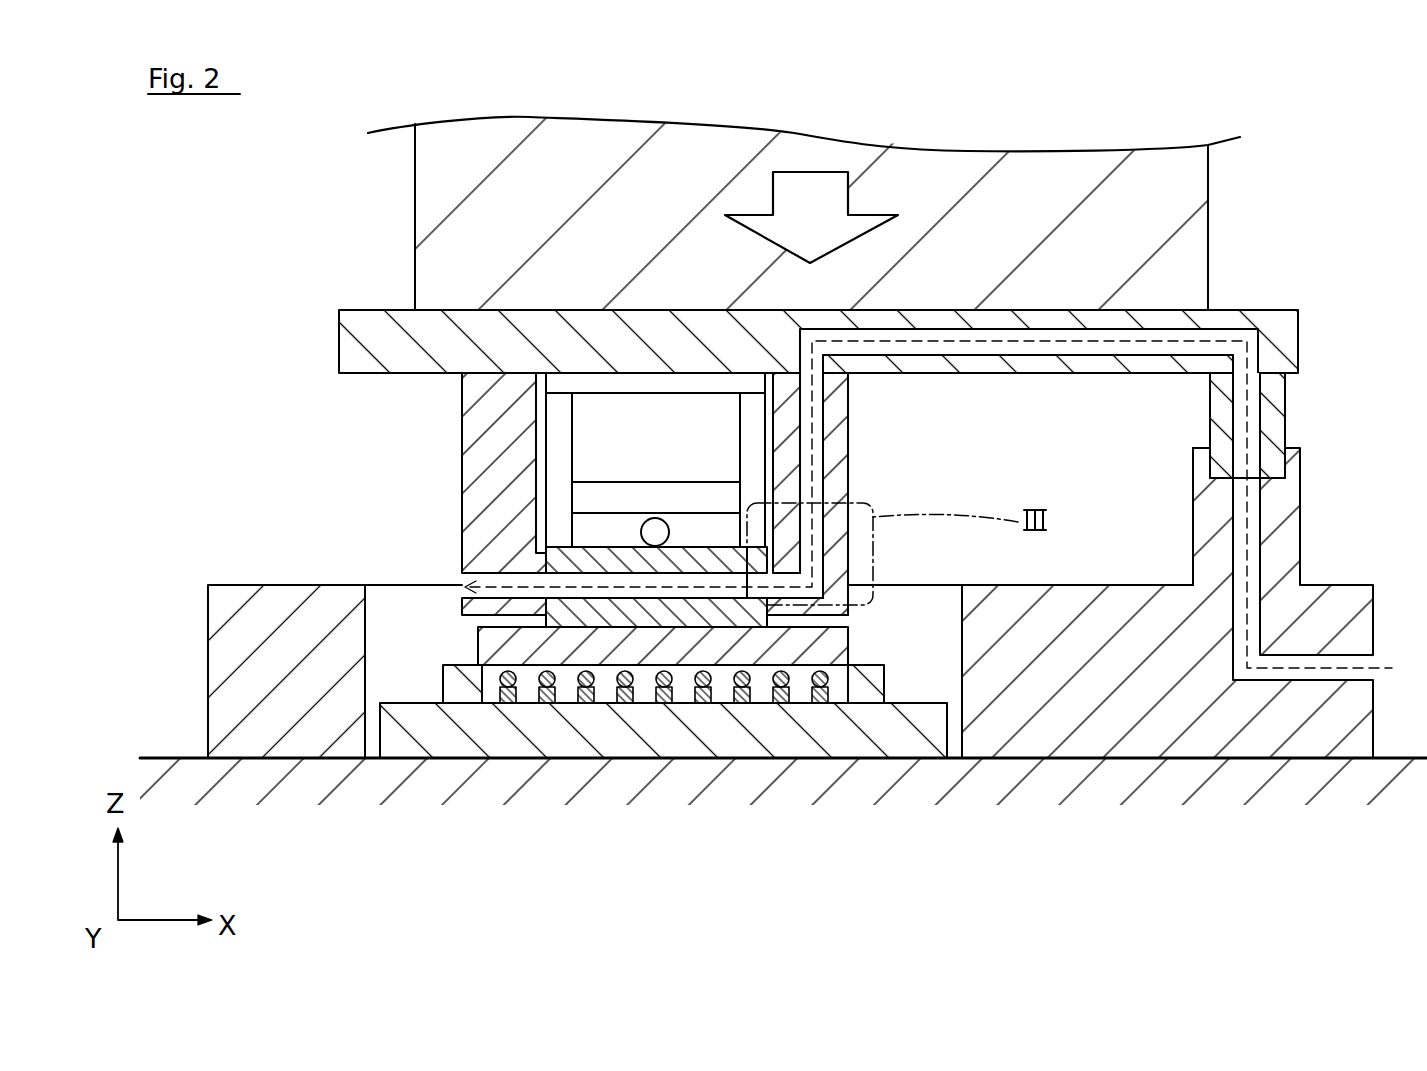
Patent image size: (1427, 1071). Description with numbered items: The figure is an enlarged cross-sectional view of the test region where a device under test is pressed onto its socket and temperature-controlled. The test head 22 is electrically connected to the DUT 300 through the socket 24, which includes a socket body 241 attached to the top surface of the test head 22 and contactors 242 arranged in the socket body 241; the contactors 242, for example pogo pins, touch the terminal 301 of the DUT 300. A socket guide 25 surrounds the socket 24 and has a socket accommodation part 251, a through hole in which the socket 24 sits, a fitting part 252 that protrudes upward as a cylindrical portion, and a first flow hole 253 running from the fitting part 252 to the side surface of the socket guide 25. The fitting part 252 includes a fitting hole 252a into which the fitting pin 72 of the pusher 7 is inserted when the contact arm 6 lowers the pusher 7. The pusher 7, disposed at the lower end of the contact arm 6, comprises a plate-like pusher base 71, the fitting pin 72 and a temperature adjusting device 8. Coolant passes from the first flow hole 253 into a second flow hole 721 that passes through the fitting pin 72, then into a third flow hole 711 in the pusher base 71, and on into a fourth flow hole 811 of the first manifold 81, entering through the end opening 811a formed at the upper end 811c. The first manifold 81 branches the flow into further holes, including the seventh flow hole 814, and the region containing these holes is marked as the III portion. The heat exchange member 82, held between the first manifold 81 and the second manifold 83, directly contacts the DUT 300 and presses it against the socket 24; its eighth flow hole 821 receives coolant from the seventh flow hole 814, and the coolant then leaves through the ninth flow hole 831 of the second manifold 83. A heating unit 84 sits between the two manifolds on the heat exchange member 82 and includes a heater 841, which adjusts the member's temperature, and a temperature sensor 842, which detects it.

The contact arm 6 is at (1200, 176).
The pusher 7 is at (879, 210).
The pusher base 71 is at (1299, 340).
The third flow hole 711 is at (988, 335).
The fitting pin 72 is at (1298, 425).
The second flow hole 721 is at (1253, 432).
The temperature adjusting device 8 is at (669, 465).
The first manifold 81 is at (798, 322).
The fourth flow hole 811 is at (818, 400).
The end opening 811a is at (806, 385).
The upper end 811c is at (722, 240).
The seventh flow hole 814 is at (830, 541).
The second manifold 83 is at (462, 452).
The ninth flow hole 831 is at (483, 576).
The heating unit 84 is at (529, 336).
The heater 841 is at (570, 500).
The temperature sensor 842 is at (640, 540).
The heat exchange member 82 is at (673, 749).
The eighth flow hole 821 is at (713, 600).
The test head 22 is at (158, 756).
The socket 24 is at (663, 764).
The socket body 241 is at (628, 740).
The contactors 242 is at (699, 668).
The socket guide 25 is at (268, 772).
The socket accommodation part 251 is at (958, 610).
The fitting part 252 is at (1250, 595).
The fitting hole 252a is at (1213, 445).
The first flow hole 253 is at (1253, 520).
The DUT 300 is at (862, 646).
The terminal 301 is at (650, 679).
The III portion III is at (959, 520).